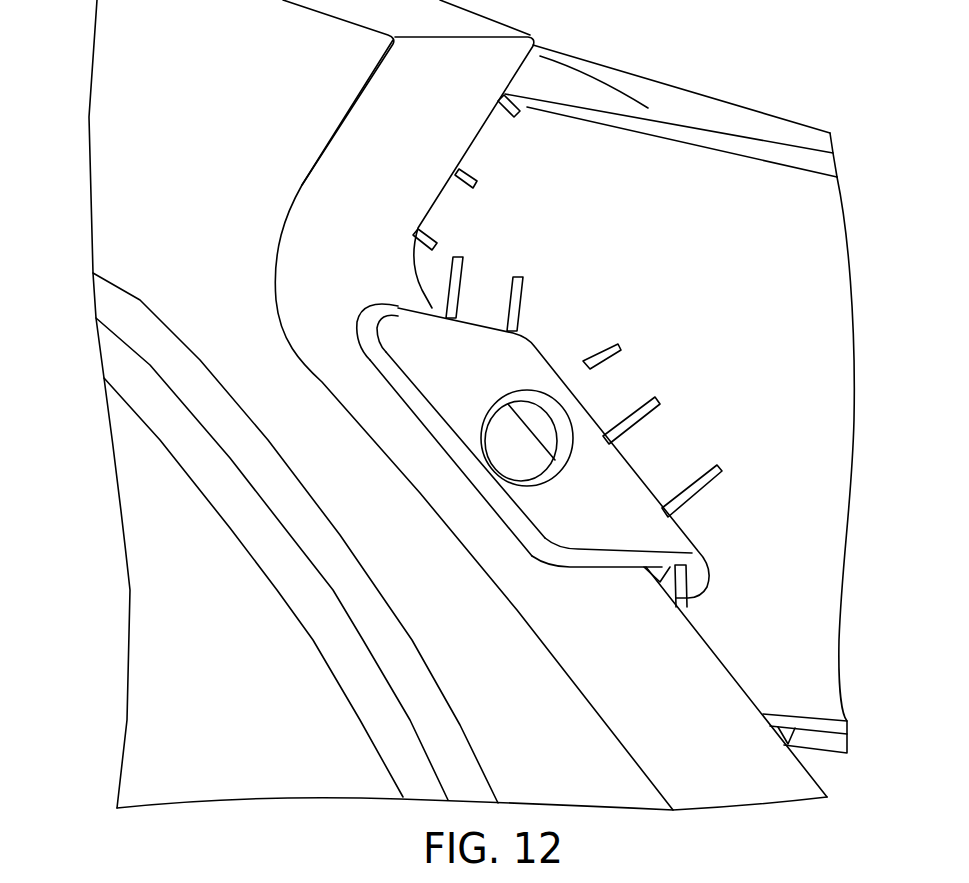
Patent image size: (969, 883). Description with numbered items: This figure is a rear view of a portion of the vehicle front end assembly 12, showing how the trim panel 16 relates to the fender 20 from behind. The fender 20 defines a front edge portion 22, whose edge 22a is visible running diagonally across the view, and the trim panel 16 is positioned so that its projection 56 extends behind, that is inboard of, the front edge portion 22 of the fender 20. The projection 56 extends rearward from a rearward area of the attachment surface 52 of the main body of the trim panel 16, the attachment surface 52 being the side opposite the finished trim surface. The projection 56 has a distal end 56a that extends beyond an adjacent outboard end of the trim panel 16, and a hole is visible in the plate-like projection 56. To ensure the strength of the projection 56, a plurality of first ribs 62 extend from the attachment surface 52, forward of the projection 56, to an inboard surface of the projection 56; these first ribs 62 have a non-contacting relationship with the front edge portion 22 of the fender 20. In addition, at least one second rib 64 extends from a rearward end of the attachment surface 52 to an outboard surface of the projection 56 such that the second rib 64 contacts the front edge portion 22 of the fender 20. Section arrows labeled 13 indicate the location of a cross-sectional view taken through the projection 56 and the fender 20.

The vehicle front end assembly 12 is at (752, 38).
The section line / view indicator 13 is at (483, 526).
The trim panel 16 is at (774, 112).
The fender 20 is at (88, 117).
The front edge portion 22 is at (713, 755).
The edge of band portion 22a is at (720, 657).
The attachment surface 52 is at (783, 230).
The projection 56 is at (399, 322).
The distal end 56a is at (382, 382).
The first ribs 62 is at (461, 256).
The second rib 64 is at (667, 583).